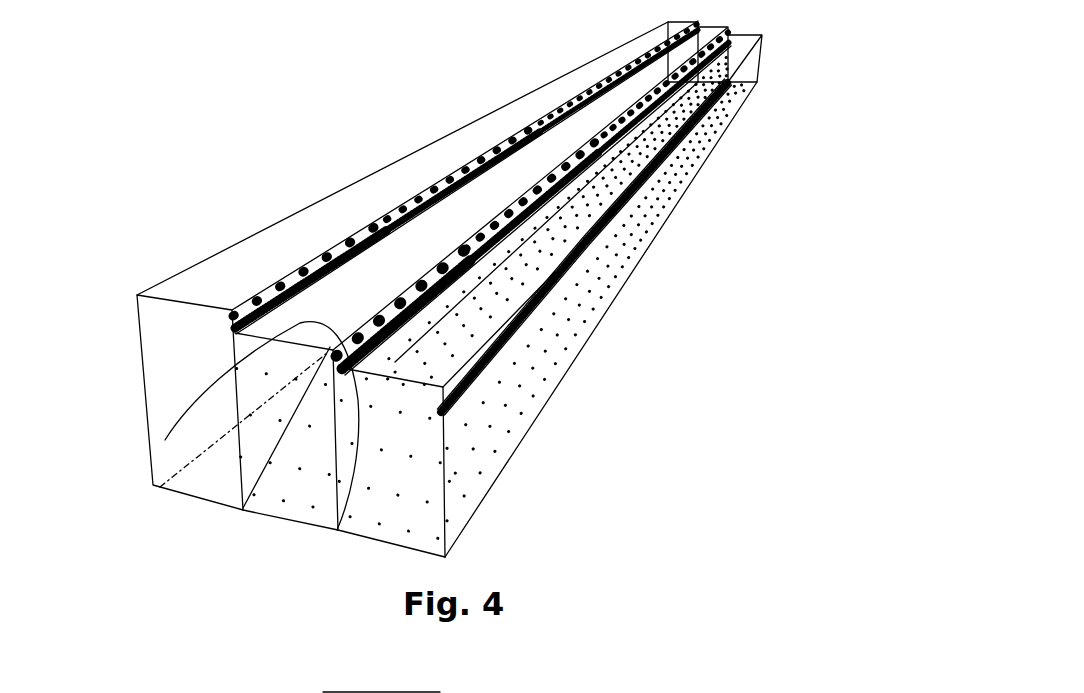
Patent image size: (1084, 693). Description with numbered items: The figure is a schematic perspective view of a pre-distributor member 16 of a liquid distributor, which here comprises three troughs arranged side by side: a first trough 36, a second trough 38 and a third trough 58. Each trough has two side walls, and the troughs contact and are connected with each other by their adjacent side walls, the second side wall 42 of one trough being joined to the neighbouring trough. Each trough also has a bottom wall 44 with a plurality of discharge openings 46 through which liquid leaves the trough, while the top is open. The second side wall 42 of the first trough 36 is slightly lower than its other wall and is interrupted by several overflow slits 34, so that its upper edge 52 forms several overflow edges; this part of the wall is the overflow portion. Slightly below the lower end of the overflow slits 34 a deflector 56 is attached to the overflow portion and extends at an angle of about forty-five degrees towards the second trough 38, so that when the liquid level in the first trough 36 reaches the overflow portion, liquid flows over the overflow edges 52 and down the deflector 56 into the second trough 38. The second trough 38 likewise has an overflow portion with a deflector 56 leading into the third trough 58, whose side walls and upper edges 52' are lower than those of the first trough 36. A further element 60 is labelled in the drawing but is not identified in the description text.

The overflow slits 34 is at (330, 250).
The first trough 36 is at (162, 375).
The second trough 38 is at (282, 400).
The second side wall 42 is at (400, 457).
The bottom wall 44 is at (483, 460).
The discharge openings 46 is at (410, 528).
The upper edge / overflow edges 52 is at (237, 460).
The upper edges of the side walls of the second trough 52' is at (754, 52).
The deflector 56 is at (500, 296).
The third trough 58 is at (405, 447).
The pre-distributor member 16 is at (212, 605).
The component 60 is at (440, 692).